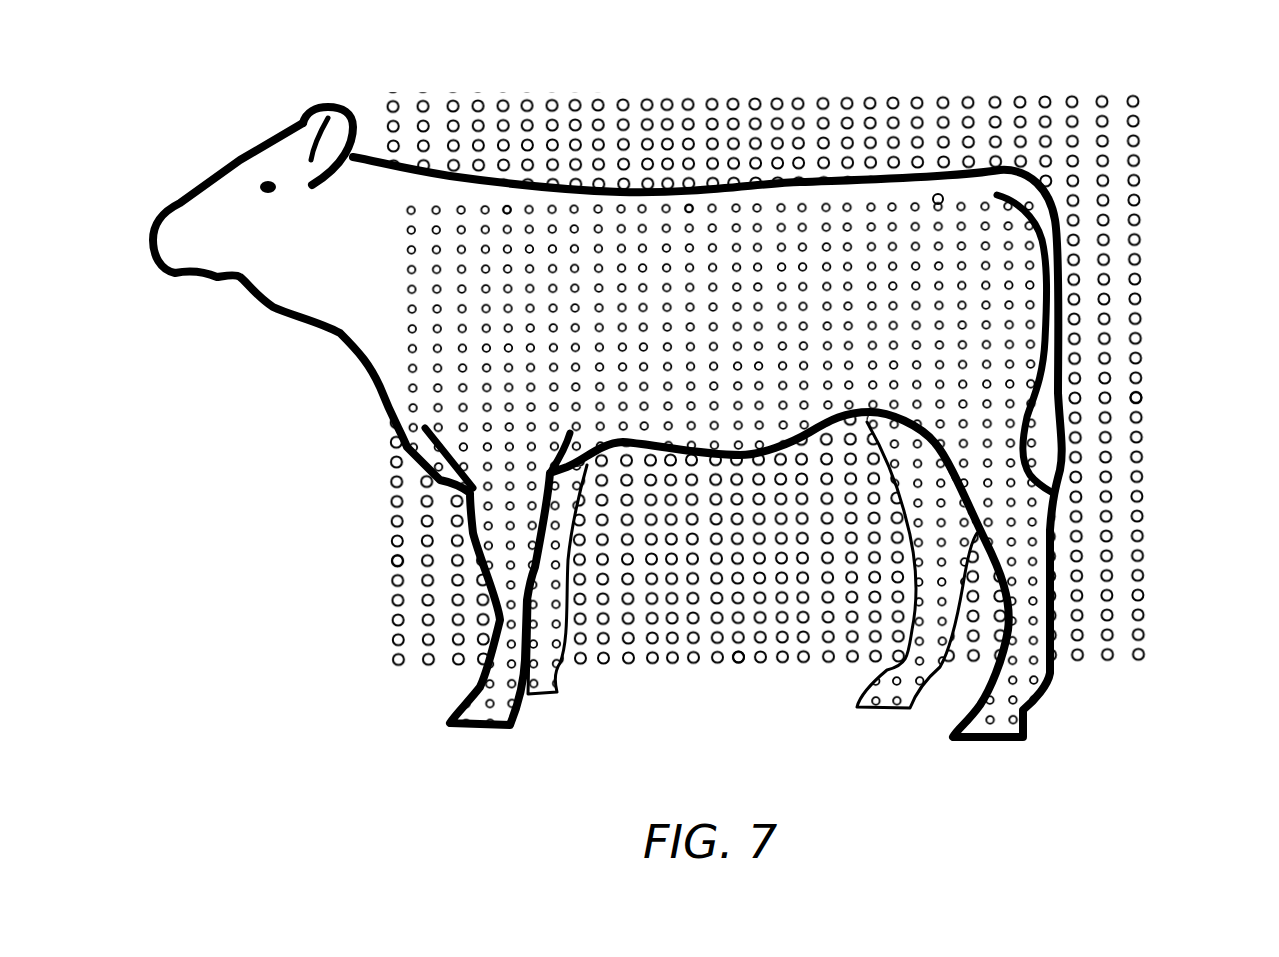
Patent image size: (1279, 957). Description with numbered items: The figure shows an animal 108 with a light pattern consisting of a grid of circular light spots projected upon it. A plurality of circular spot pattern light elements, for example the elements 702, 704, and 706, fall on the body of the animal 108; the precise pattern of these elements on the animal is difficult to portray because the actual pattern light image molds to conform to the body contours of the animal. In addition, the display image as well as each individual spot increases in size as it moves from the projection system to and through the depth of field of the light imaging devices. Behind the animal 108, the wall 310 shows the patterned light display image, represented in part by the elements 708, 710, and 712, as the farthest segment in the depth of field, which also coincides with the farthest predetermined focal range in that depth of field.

The animal 108 is at (237, 232).
The wall 310 is at (1180, 71).
The circular spot pattern light element 702 is at (505, 208).
The circular spot pattern light element 704 is at (690, 207).
The circular spot pattern light element 706 is at (937, 193).
The patterned light display image element 708 is at (395, 562).
The patterned light display image element 710 is at (738, 660).
The patterned light display image element 712 is at (1138, 409).